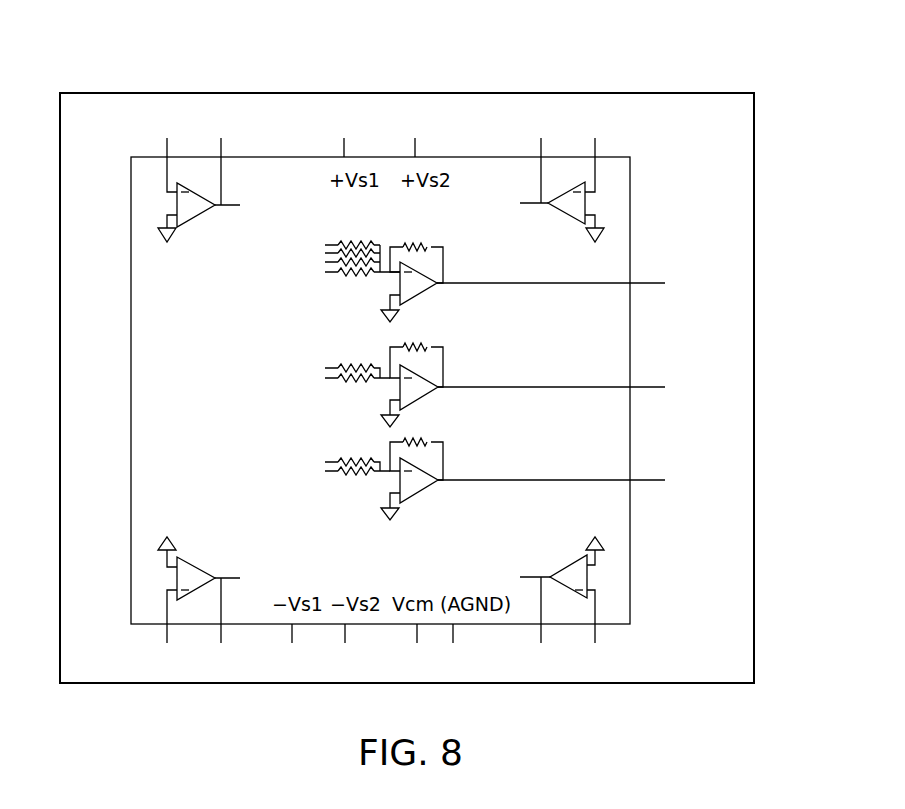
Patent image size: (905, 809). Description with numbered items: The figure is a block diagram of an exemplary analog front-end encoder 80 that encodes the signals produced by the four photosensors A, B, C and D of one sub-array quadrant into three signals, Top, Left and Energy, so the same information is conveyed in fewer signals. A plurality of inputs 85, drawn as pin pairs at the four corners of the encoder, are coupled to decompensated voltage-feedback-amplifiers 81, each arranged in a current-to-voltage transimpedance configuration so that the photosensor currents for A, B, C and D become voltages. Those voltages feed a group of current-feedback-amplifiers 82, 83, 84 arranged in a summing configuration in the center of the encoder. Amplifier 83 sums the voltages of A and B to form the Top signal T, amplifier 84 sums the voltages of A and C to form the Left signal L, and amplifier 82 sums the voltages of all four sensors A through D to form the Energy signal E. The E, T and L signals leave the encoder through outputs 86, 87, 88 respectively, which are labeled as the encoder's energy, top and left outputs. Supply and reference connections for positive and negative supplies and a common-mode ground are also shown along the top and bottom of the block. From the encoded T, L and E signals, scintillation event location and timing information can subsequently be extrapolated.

The analog front-end encoder 80 is at (80, 62).
The decompensated voltage-feedback-amplifier 81 is at (195, 205).
The current-feedback-amplifier 82 is at (420, 259).
The current-feedback-amplifier 83 is at (420, 362).
The current-feedback-amplifier 84 is at (420, 455).
The inputs 85 is at (207, 150).
The output 86 is at (728, 283).
The output 87 is at (728, 386).
The output 88 is at (728, 480).